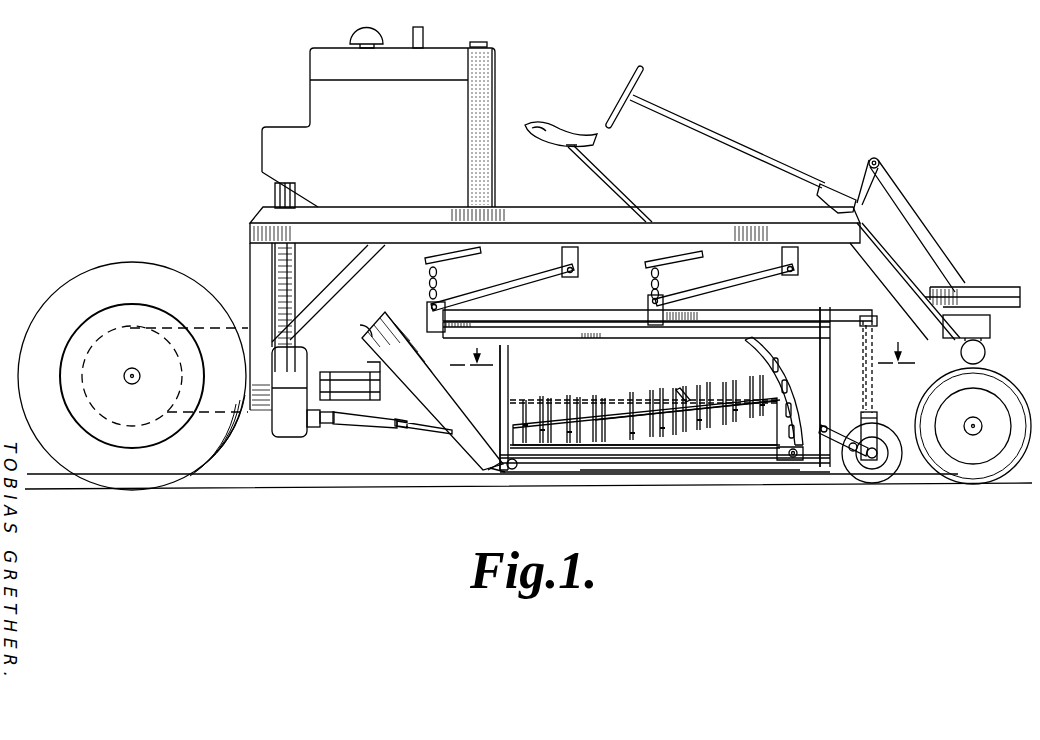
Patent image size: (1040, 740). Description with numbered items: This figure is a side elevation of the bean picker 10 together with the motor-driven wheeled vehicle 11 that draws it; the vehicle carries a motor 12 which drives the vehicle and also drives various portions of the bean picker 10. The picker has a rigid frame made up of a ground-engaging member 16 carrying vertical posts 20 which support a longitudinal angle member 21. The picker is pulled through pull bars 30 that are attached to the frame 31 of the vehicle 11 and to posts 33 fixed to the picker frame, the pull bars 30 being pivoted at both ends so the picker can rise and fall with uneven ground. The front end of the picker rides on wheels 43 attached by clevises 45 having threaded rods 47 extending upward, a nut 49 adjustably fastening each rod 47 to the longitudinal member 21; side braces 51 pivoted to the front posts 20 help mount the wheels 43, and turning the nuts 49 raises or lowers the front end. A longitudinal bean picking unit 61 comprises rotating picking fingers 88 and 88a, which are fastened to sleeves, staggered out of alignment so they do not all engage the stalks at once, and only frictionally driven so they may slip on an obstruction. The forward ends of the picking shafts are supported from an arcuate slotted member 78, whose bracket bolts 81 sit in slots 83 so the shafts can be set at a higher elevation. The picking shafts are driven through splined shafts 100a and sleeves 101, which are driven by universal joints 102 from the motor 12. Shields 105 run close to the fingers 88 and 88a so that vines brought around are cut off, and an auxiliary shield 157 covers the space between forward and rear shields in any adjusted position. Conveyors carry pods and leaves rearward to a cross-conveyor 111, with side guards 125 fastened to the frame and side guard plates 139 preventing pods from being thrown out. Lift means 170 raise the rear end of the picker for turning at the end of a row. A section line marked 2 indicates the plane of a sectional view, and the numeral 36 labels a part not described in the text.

The bean picker 10 is at (467, 466).
The wheeled vehicle 11 is at (896, 256).
The motor 12 is at (316, 147).
The ground-engaging member 16 is at (800, 467).
The vertical post 20 is at (503, 388).
The longitudinal angle member 21 is at (605, 318).
The pull bar 30 is at (517, 285).
The frame 31 is at (562, 230).
The post 33 is at (428, 312).
The caster arm 36 is at (838, 425).
The wheel 43 is at (878, 475).
The clevis 45 is at (875, 417).
The threaded rod 47 is at (868, 378).
The nut 49 is at (865, 317).
The side brace 51 is at (853, 448).
The longitudinal bean picking unit 61 is at (690, 393).
The arcuate slotted member 78 is at (762, 352).
The bolt 81 is at (787, 415).
The slot 83 is at (780, 378).
The finger 88 is at (630, 397).
The finger 88a is at (644, 405).
The splined shaft 100a is at (407, 433).
The sleeve 101 is at (388, 430).
The universal joint 102 is at (333, 422).
The shield 105 is at (700, 423).
The cross-conveyor 111 is at (345, 372).
The side guard 125 is at (444, 388).
The side guard plate 139 is at (645, 376).
The auxiliary shield 157 is at (622, 442).
The lift means 170 is at (447, 262).
The section line 2 is at (684, 353).